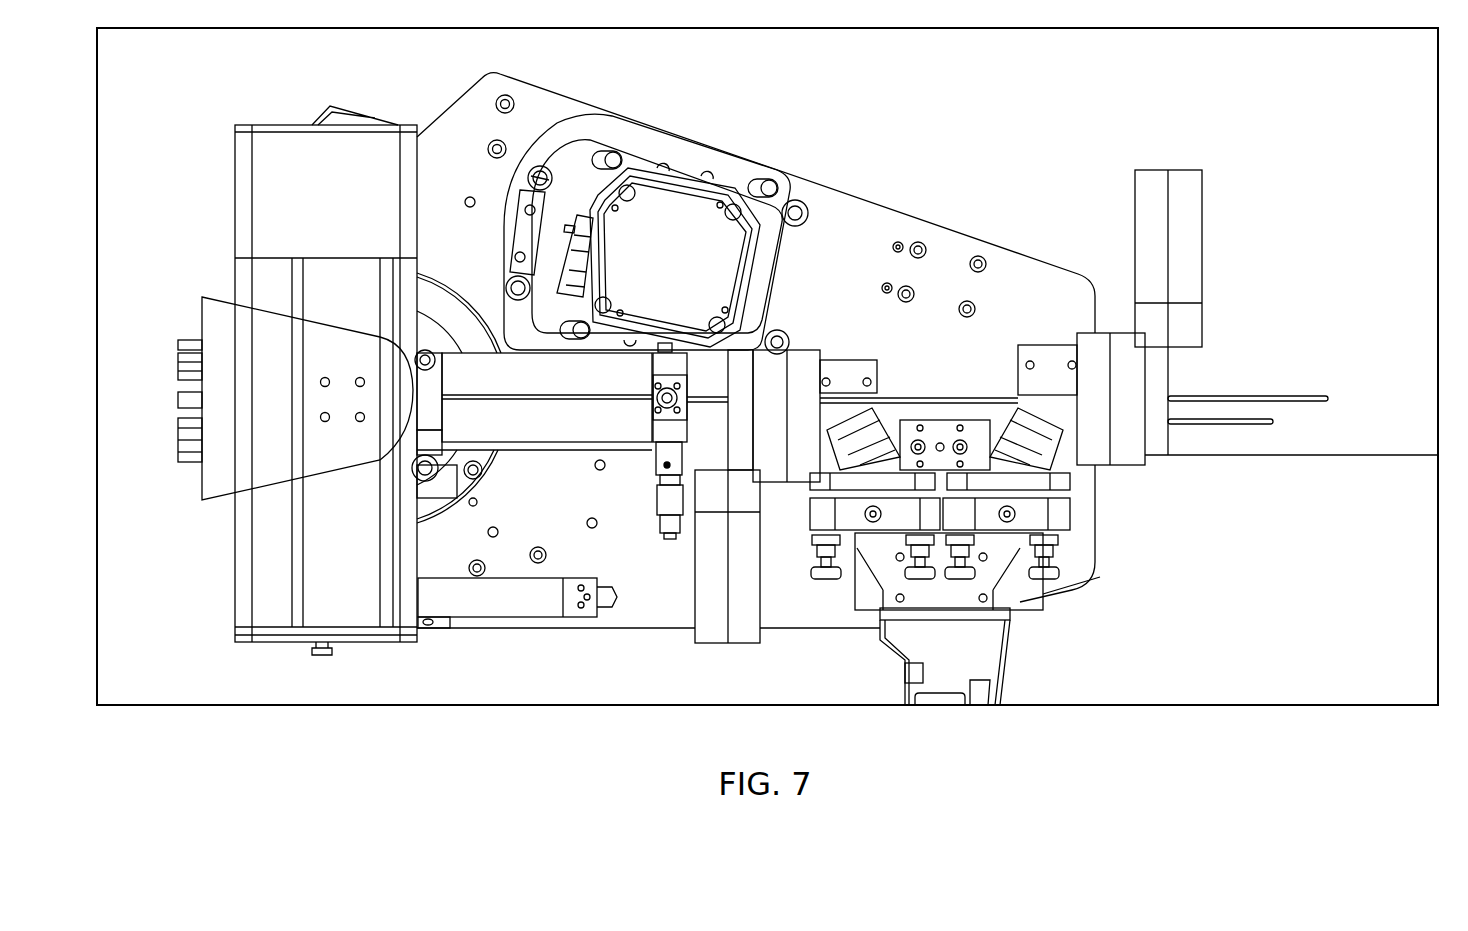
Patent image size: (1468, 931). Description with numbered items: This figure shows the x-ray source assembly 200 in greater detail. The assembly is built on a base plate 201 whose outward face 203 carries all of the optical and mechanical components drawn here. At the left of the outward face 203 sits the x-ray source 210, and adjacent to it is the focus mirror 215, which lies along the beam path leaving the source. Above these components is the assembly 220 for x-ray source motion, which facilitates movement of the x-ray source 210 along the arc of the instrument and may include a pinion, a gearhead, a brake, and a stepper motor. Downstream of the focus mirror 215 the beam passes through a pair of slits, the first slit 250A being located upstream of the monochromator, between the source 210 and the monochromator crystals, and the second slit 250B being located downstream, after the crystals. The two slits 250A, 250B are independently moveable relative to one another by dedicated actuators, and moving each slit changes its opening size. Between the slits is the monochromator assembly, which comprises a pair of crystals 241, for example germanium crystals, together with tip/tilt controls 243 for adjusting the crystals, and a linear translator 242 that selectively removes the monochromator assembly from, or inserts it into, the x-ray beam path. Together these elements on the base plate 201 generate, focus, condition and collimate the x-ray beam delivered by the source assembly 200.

The x-ray source assembly 200 is at (1062, 125).
The base plate 201 is at (1008, 262).
The outward face 203 is at (1108, 258).
The x-ray source 210 is at (310, 380).
The focus mirror 215 is at (564, 446).
The assembly for x-ray source motion 220 is at (575, 93).
The pair of crystals 241 is at (995, 407).
The linear translator 242 is at (949, 619).
The tip/tilt controls 243 is at (822, 535).
The slit 250A is at (757, 496).
The slit 250B is at (1209, 399).